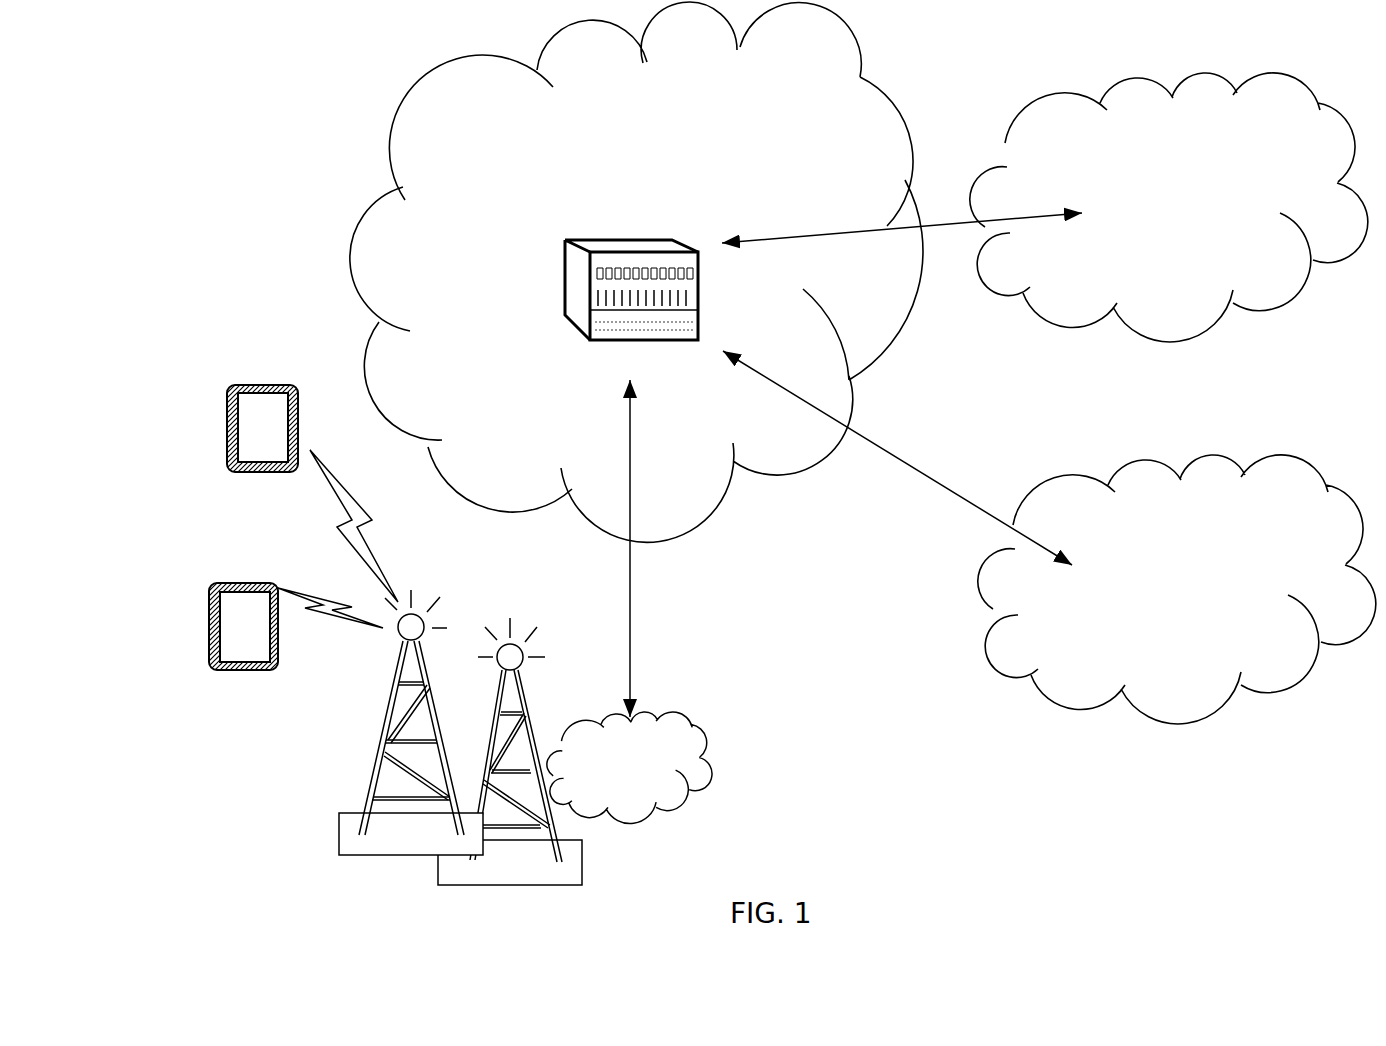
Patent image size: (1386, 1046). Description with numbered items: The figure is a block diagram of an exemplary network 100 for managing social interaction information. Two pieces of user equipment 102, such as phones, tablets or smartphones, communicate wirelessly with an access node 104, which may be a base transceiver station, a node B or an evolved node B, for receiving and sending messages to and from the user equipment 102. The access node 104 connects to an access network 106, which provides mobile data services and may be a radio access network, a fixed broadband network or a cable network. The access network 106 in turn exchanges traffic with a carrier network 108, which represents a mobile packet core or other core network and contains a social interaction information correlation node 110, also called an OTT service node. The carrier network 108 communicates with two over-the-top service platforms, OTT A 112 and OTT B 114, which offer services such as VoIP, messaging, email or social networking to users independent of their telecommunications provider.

The network 100 is at (306, 176).
The user equipment 102 is at (257, 383).
The access node 104 is at (383, 710).
The access network 106 is at (712, 777).
The carrier network 108 is at (420, 99).
The social interaction information correlation node 110 is at (563, 275).
The OTT A 112 is at (1007, 140).
The OTT B 114 is at (1070, 477).